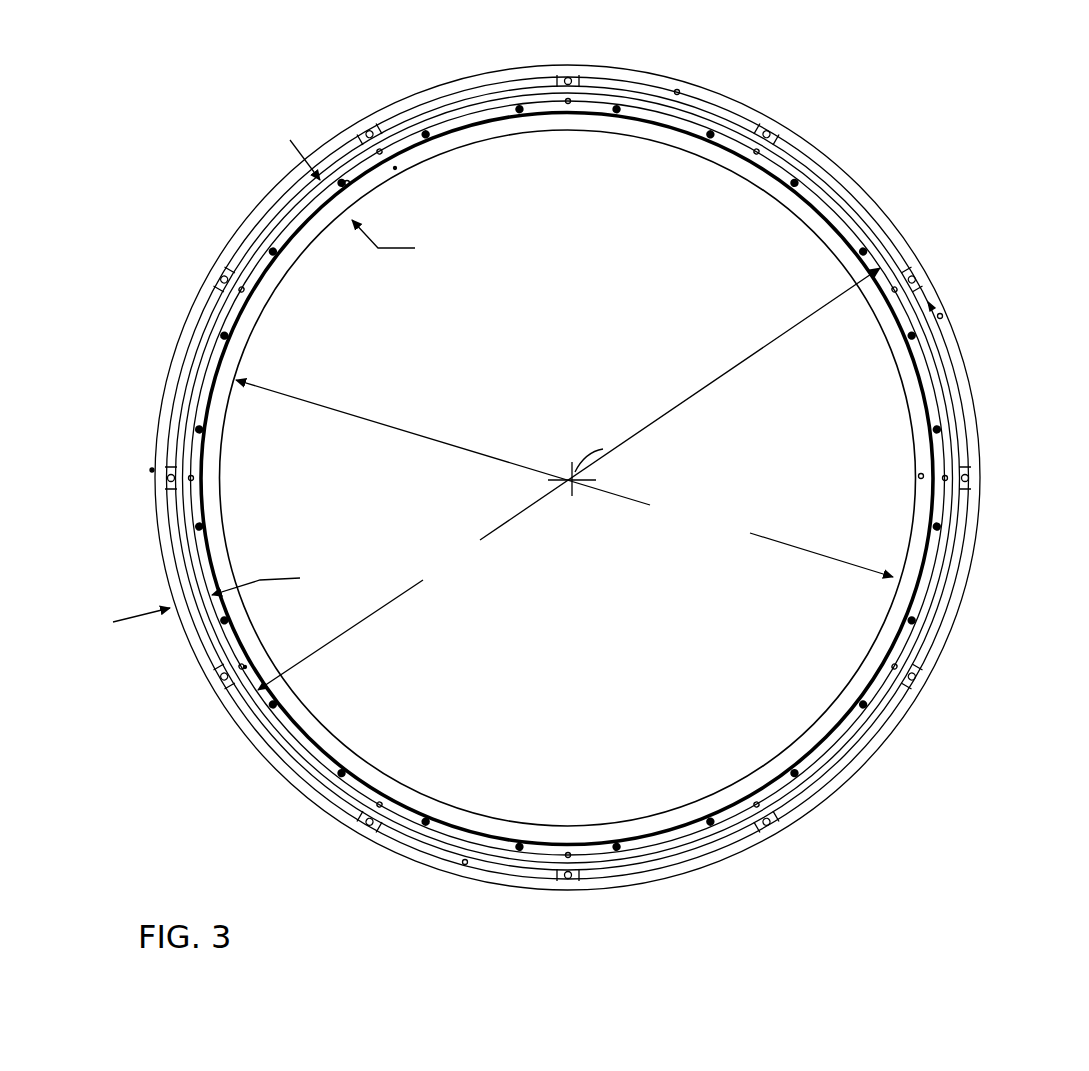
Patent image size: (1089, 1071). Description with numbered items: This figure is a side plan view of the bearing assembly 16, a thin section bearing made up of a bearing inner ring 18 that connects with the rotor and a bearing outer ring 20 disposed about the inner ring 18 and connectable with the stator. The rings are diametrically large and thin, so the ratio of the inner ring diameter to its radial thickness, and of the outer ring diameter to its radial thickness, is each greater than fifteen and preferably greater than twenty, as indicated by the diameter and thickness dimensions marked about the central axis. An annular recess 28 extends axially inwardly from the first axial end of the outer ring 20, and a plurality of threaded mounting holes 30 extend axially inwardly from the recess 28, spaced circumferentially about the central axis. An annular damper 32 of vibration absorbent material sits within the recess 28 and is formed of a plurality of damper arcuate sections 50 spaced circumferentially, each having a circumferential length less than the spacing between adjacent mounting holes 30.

The bearing assembly 16 is at (205, 115).
The bearing inner ring 18 is at (483, 146).
The bearing outer ring 20 is at (203, 271).
The annular recess 28 is at (932, 306).
The threaded mounting holes 30 is at (372, 126).
The annular damper 32 is at (897, 232).
The damper arcuate sections 50 is at (463, 88).